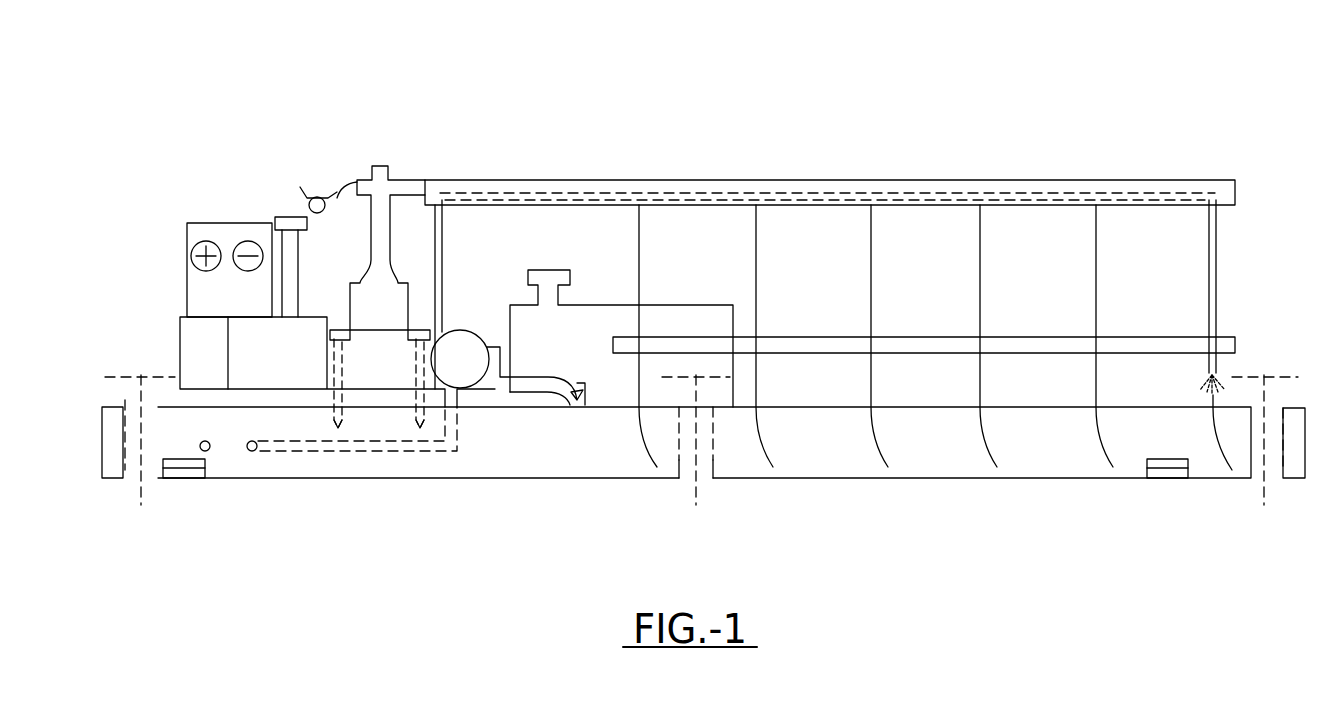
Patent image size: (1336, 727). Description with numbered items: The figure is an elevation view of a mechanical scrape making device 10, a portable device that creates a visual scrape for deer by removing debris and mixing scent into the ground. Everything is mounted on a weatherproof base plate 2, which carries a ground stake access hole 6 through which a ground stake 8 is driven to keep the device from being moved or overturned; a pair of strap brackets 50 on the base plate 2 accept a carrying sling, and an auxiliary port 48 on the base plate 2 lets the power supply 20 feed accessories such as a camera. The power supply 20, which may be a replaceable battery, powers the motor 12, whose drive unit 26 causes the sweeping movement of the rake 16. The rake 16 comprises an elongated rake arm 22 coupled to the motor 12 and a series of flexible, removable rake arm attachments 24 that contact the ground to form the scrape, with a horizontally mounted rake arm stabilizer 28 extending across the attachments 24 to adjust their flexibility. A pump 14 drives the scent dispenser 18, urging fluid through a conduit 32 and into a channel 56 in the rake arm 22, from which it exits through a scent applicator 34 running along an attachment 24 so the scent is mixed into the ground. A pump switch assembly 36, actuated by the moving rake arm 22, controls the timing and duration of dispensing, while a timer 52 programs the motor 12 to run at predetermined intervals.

The mechanical scrape making device 10 is at (1000, 150).
The base plate 2 is at (704, 442).
The ground stake access hole 6 is at (132, 410).
The ground stake 8 is at (140, 480).
The motor 12 is at (310, 327).
The pump 14 is at (462, 330).
The rake 16 is at (830, 239).
The scent dispenser 18 is at (586, 305).
The power supply 20 is at (187, 248).
The rake arm 22 is at (512, 180).
The rake arm attachment 24 is at (640, 242).
The drive unit 26 is at (392, 265).
The rake arm stabilizer 28 is at (797, 337).
The conduit 32 is at (442, 238).
The scent applicator 34 is at (1217, 283).
The pump switch assembly 36 is at (318, 196).
The auxiliary port 48 is at (210, 451).
The strap bracket 50 is at (186, 474).
The timer 52 is at (302, 329).
The channel 56 is at (843, 195).